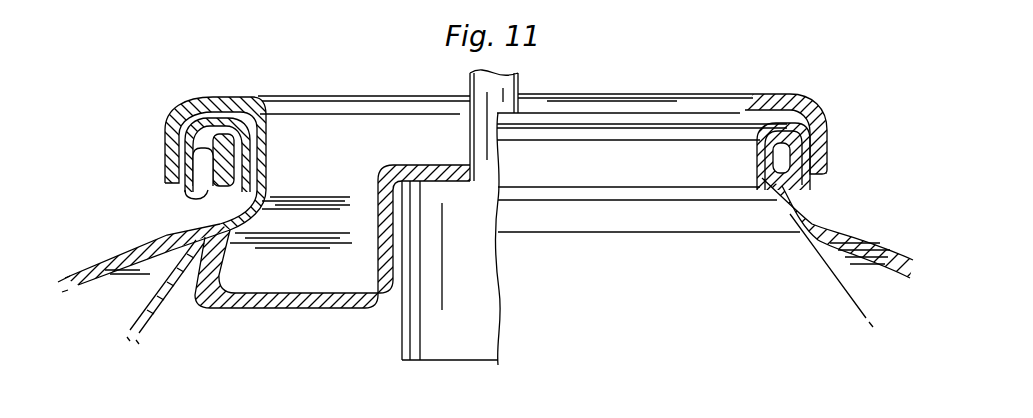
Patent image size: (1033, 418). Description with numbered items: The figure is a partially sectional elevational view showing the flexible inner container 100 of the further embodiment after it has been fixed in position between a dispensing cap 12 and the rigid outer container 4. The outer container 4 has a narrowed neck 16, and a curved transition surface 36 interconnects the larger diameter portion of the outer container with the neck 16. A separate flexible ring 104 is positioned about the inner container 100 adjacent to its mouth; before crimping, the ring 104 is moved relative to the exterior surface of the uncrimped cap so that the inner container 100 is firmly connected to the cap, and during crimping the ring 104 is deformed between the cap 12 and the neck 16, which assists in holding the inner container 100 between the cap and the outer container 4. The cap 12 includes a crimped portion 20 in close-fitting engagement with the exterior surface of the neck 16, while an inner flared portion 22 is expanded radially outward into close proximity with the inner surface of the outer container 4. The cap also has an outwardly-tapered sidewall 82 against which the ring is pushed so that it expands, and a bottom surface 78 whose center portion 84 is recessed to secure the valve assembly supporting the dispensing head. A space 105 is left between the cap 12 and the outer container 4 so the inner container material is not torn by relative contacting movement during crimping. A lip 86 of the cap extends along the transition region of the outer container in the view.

The rigid outer container 4 is at (880, 232).
The cap 12 is at (672, 60).
The neck 16 is at (190, 193).
The crimped portion 20 is at (168, 153).
The inner flared portion 22 is at (220, 265).
The curved transition surface 36 is at (122, 240).
The bottom surface 78 is at (305, 285).
The outwardly-tapered sidewall 82 is at (240, 234).
The center portion 84 is at (380, 252).
The sealing lip 86 is at (792, 216).
The flexible inner container 100 is at (128, 326).
The ring 104 is at (254, 120).
The space 105 is at (258, 198).